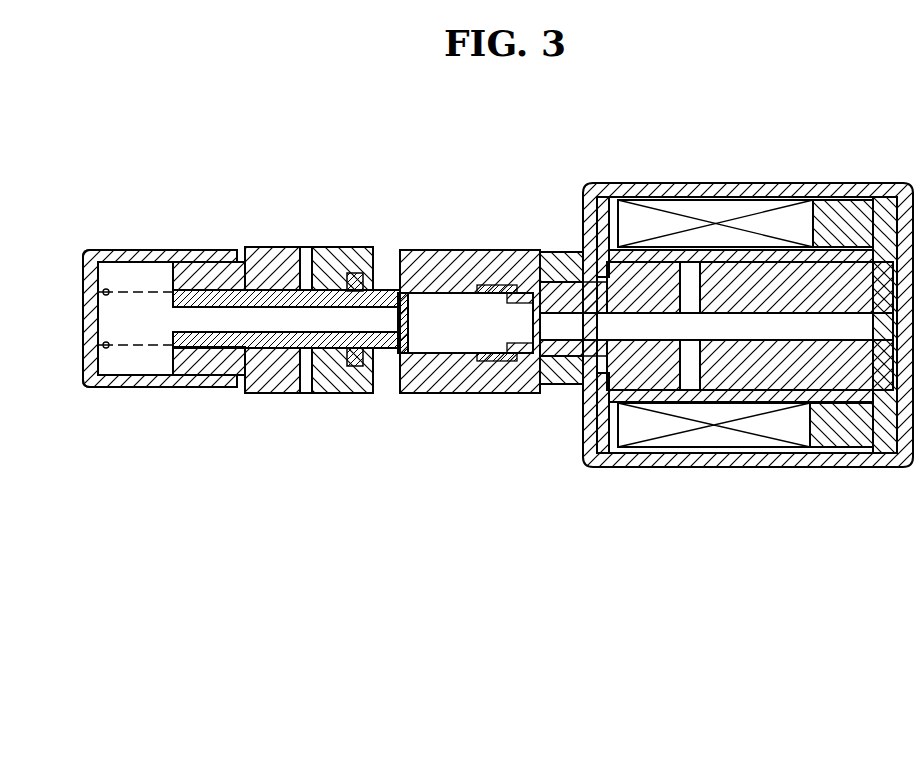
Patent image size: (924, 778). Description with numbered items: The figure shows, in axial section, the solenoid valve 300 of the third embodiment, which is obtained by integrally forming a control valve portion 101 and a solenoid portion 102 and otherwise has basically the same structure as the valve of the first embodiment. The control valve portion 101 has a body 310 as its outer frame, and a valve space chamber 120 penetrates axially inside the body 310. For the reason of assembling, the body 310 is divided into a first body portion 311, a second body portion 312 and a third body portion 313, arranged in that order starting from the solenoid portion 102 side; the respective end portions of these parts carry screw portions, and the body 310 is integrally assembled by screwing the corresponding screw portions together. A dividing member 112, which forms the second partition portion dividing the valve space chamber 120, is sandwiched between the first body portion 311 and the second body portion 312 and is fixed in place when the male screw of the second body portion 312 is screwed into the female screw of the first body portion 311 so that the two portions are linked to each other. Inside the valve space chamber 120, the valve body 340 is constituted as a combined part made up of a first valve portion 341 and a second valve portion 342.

The solenoid valve 300 is at (498, 395).
The control valve portion 101 is at (345, 333).
The solenoid portion 102 is at (713, 476).
The body 310 is at (443, 258).
The first body portion 311 is at (563, 273).
The second body portion 312 is at (258, 262).
The third body portion 313 is at (132, 250).
The valve space chamber 120 is at (148, 275).
The dividing member 112 is at (357, 262).
The valve body 340 is at (310, 390).
The first valve portion 341 is at (343, 368).
The second valve portion 342 is at (280, 350).